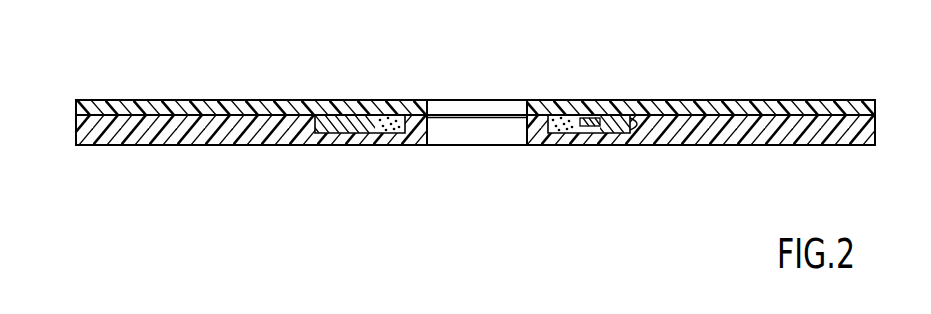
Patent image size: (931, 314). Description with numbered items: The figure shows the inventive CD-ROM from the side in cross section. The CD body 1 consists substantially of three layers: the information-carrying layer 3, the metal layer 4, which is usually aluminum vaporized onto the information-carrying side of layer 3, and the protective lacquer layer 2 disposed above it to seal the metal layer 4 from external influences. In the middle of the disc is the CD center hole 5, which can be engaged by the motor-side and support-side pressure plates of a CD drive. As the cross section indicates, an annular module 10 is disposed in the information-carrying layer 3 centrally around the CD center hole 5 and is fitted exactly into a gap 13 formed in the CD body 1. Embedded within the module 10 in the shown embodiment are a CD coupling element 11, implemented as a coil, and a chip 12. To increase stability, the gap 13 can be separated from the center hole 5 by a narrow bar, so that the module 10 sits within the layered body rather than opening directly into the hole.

The CD body 1 is at (475, 80).
The protective lacquer layer 2 is at (475, 74).
The information-carrying layer 3 is at (475, 160).
The metal layer 4 is at (475, 74).
The CD center hole 5 is at (488, 87).
The annular module 10 is at (353, 160).
The CD coupling element 11 is at (386, 161).
The chip 12 is at (591, 160).
The gap 13 is at (653, 162).